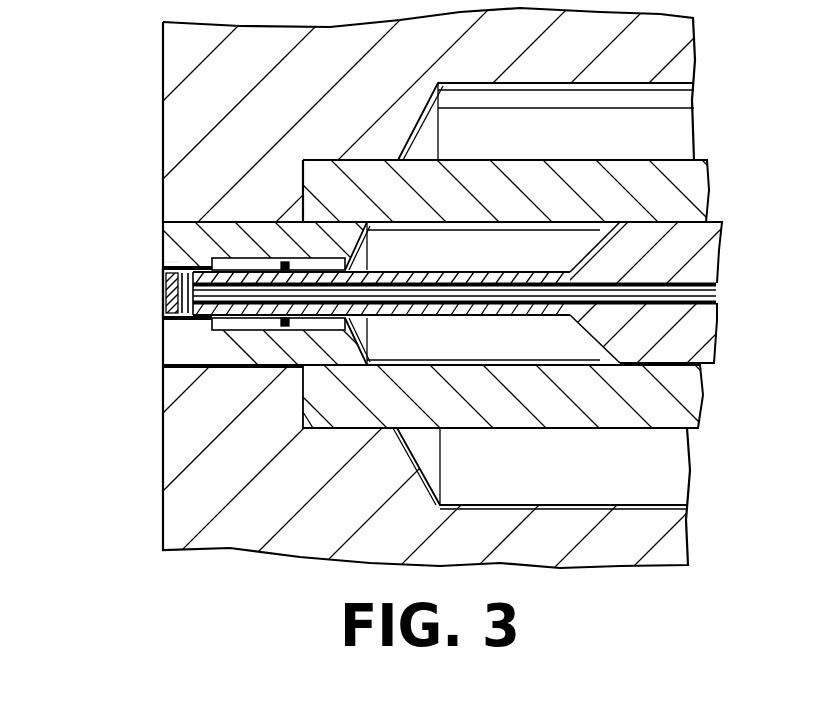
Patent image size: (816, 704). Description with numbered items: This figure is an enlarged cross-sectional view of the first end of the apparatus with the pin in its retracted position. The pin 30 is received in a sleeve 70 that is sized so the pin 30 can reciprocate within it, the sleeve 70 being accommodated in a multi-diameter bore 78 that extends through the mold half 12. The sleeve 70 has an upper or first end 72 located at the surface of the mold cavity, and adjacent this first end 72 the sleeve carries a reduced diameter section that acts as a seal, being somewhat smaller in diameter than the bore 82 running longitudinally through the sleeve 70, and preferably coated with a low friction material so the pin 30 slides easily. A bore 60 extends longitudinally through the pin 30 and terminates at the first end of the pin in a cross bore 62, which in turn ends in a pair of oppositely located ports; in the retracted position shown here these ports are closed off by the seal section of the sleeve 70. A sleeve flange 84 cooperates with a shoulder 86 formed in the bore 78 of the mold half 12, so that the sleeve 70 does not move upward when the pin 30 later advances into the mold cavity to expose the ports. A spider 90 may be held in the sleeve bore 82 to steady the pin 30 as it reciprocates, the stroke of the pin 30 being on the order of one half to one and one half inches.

The mold half 12 is at (668, 60).
The pin 30 is at (718, 320).
The bore 60 is at (487, 290).
The cross bore 62 is at (165, 297).
The sleeve 70 is at (712, 179).
The first end of the sleeve 72 is at (243, 232).
The multi-diameter bore 78 is at (660, 503).
The sleeve bore 82 is at (507, 370).
The sleeve flange 84 is at (313, 392).
The shoulder 86 is at (175, 262).
The spider 90 is at (322, 261).